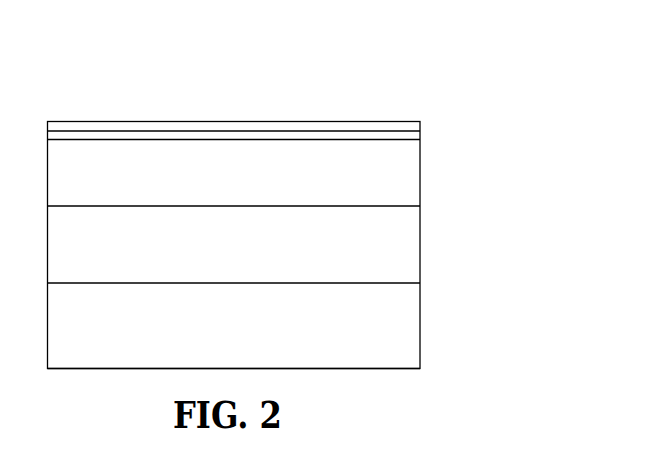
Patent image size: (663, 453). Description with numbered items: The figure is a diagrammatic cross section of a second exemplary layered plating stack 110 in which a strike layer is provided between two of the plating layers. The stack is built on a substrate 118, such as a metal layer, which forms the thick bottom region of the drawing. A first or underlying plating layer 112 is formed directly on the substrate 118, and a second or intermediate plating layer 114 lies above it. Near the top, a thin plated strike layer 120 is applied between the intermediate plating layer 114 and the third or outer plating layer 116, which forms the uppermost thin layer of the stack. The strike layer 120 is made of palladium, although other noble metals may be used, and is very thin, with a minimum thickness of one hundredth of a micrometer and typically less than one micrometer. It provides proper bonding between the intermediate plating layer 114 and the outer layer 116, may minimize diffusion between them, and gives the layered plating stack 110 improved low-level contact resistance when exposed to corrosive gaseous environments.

The layered plating stack 110 is at (447, 76).
The underlying plating layer 112 is at (410, 247).
The intermediate plating layer 114 is at (412, 170).
The outer plating layer 116 is at (347, 125).
The substrate 118 is at (412, 328).
The strike layer 120 is at (412, 135).